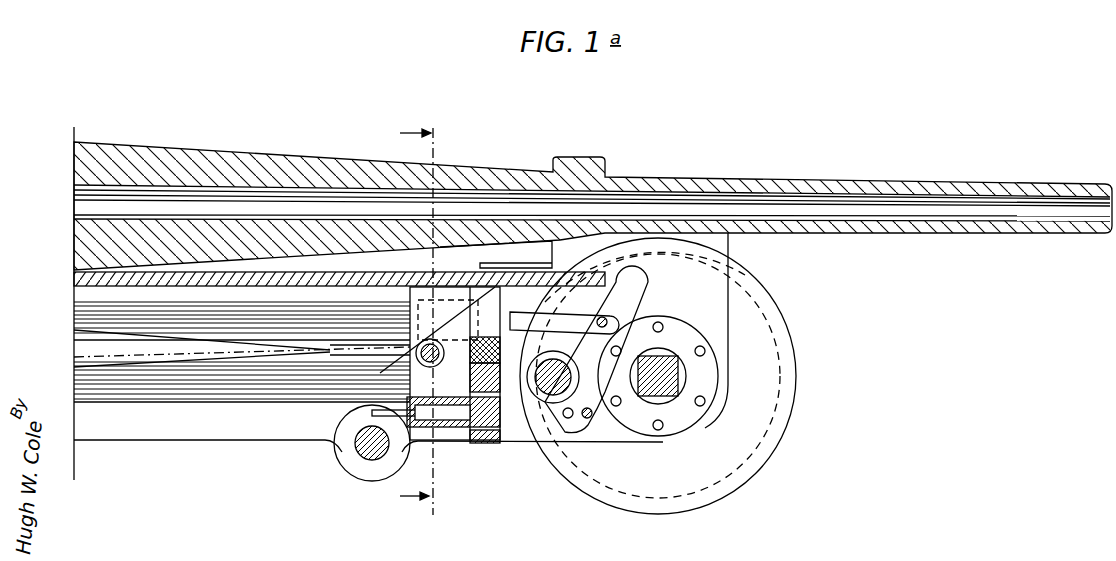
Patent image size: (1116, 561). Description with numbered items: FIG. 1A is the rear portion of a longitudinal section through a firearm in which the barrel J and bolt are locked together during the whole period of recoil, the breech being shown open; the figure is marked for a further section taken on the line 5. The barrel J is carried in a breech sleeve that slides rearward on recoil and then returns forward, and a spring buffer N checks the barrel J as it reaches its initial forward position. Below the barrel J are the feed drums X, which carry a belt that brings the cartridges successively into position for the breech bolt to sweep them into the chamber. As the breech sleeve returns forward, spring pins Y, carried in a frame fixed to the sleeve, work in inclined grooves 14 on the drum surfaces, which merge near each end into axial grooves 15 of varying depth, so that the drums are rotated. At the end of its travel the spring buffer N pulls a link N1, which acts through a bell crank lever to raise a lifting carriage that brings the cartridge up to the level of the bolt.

The barrel J is at (247, 166).
The section line 5- 5 is at (421, 320).
The feed drum X is at (118, 303).
The inclined grooves 14 is at (100, 328).
The axial grooves 15 is at (200, 392).
The spring pin Y is at (468, 441).
The spring buffer N is at (430, 386).
The link N1 is at (500, 322).